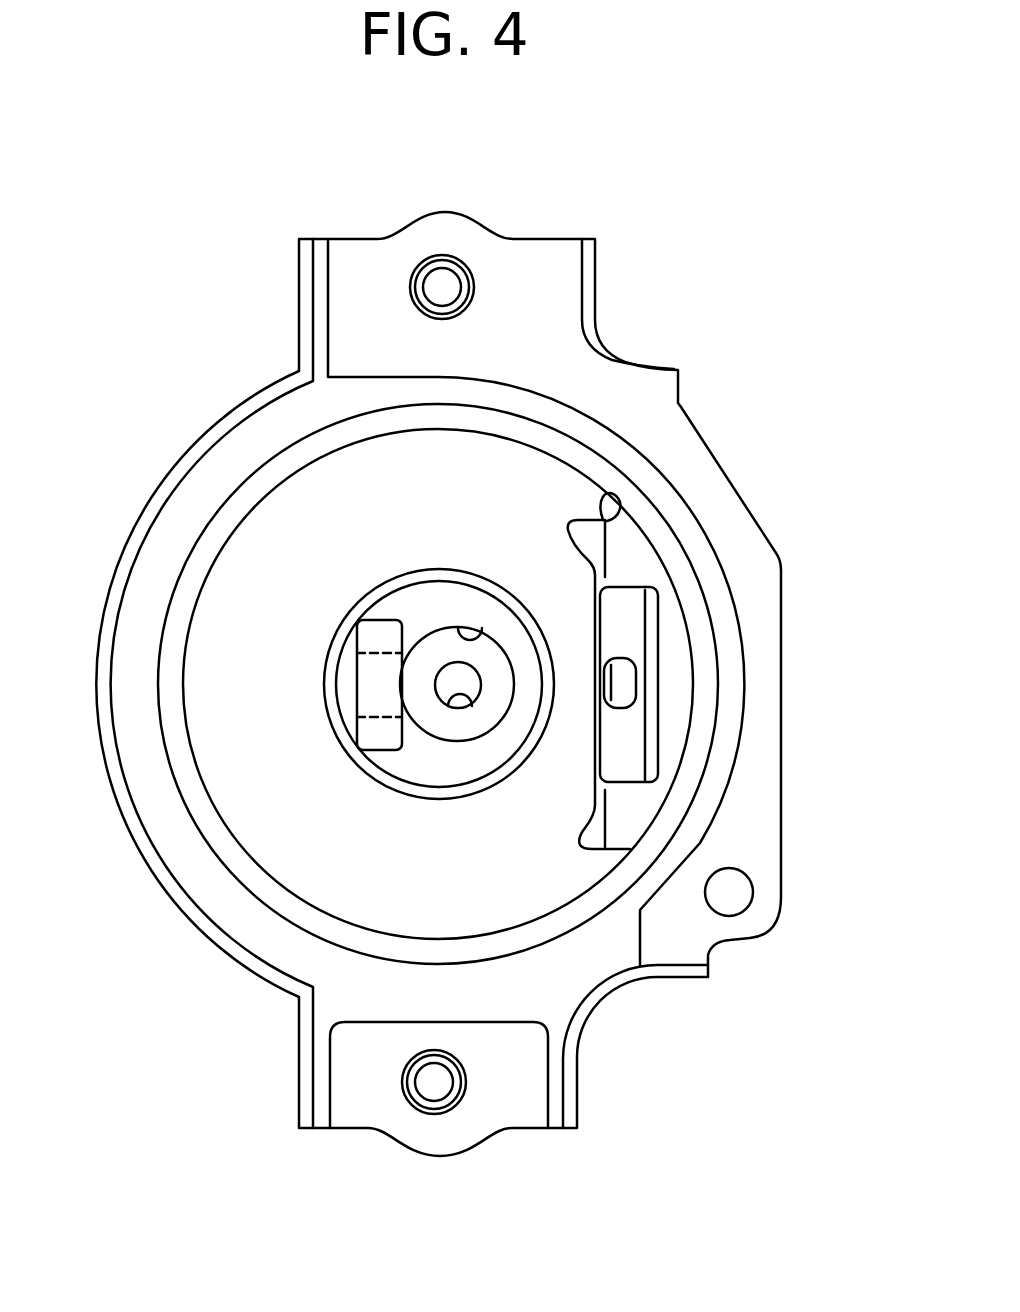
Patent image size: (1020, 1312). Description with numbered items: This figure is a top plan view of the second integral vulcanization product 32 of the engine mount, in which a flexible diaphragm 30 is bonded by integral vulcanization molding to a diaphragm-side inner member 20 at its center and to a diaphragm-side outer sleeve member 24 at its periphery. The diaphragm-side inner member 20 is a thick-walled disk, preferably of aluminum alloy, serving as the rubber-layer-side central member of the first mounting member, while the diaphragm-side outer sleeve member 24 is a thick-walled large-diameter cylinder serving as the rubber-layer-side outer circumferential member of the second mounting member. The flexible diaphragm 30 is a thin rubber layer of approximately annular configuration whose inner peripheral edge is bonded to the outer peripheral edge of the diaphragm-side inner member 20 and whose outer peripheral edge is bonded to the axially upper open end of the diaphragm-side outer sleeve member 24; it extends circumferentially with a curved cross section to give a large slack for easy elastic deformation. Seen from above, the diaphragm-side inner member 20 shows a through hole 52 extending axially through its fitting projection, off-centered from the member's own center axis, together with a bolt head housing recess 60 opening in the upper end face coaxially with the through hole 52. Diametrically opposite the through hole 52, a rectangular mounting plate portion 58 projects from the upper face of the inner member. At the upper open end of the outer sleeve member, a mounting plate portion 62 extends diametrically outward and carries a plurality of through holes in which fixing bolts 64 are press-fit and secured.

The diaphragm-side inner member 20 is at (413, 760).
The diaphragm-side outer sleeve member 24 is at (762, 680).
The flexible diaphragm 30 is at (298, 502).
The second integral vulcanization product 32 is at (755, 455).
The through hole 52 is at (465, 698).
The mounting plate portion 58 is at (365, 638).
The bolt head housing recess 60 is at (470, 638).
The mounting plate portion 62 is at (547, 262).
The fixing bolts 64 is at (443, 284).